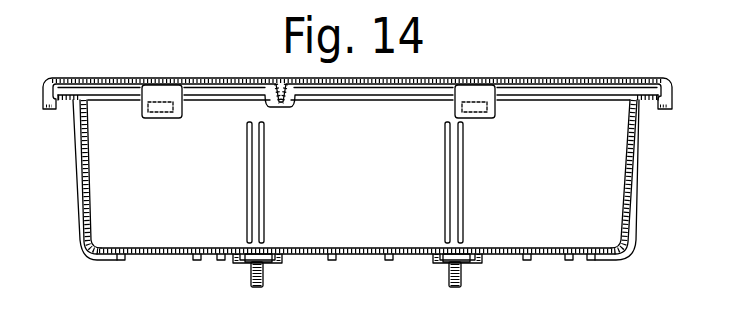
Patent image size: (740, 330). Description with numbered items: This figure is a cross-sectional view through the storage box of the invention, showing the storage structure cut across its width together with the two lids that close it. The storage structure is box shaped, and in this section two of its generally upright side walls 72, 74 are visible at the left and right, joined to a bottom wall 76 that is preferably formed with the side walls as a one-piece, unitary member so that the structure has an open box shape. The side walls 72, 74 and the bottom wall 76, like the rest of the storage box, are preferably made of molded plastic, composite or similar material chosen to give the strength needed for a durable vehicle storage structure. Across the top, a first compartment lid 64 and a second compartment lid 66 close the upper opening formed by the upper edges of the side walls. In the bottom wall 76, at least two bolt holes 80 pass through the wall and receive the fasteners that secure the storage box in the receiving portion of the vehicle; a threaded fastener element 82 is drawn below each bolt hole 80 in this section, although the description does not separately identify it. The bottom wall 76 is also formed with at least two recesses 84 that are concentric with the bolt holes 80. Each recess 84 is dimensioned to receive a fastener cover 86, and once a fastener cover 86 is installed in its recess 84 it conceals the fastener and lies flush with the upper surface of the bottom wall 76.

The first compartment lid 64 is at (157, 78).
The second compartment lid 66 is at (590, 78).
The side wall 72 is at (633, 188).
The side wall 74 is at (85, 180).
The bottom wall 76 is at (547, 254).
The bolt hole 80 is at (272, 263).
The screw 82 is at (267, 275).
The recess 84 is at (245, 263).
The fastener cover 86 is at (270, 248).